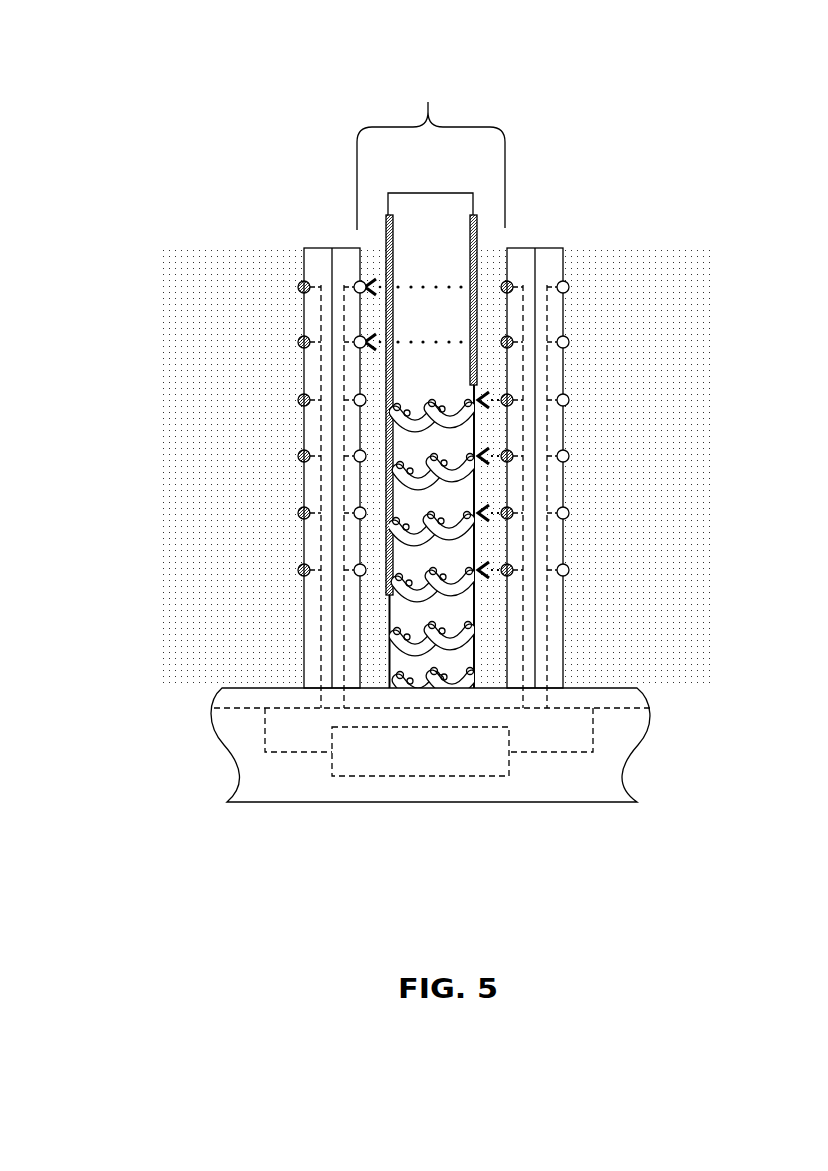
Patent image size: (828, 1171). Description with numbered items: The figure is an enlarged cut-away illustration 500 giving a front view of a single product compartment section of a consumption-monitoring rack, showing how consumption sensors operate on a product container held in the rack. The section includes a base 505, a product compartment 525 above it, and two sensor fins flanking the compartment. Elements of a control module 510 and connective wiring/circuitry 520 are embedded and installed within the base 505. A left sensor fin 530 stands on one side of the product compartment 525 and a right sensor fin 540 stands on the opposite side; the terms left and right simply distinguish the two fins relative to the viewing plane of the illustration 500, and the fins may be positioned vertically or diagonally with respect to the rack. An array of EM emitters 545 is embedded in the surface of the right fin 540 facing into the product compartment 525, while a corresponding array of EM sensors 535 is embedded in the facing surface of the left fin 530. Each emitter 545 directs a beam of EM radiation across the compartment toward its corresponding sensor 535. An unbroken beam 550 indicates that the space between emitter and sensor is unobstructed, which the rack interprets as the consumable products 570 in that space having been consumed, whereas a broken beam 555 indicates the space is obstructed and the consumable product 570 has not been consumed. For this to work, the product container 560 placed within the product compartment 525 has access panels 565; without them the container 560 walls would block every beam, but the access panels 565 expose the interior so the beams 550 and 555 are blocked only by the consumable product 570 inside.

The illustration 500 is at (73, 27).
The base 505 is at (406, 772).
The control module 510 is at (350, 833).
The connective wiring/circuitry 520 is at (432, 745).
The product compartment 525 is at (511, 369).
The left sensor fin 530 is at (345, 260).
The EM sensors 535 is at (357, 291).
The right sensor fin 540 is at (518, 258).
The EM emitters 545 is at (513, 292).
The unbroken beam 550 is at (425, 290).
The broken beam 555 is at (490, 455).
The product container 560 is at (430, 192).
The access panels 565 is at (477, 228).
The consumable products 570 is at (433, 537).